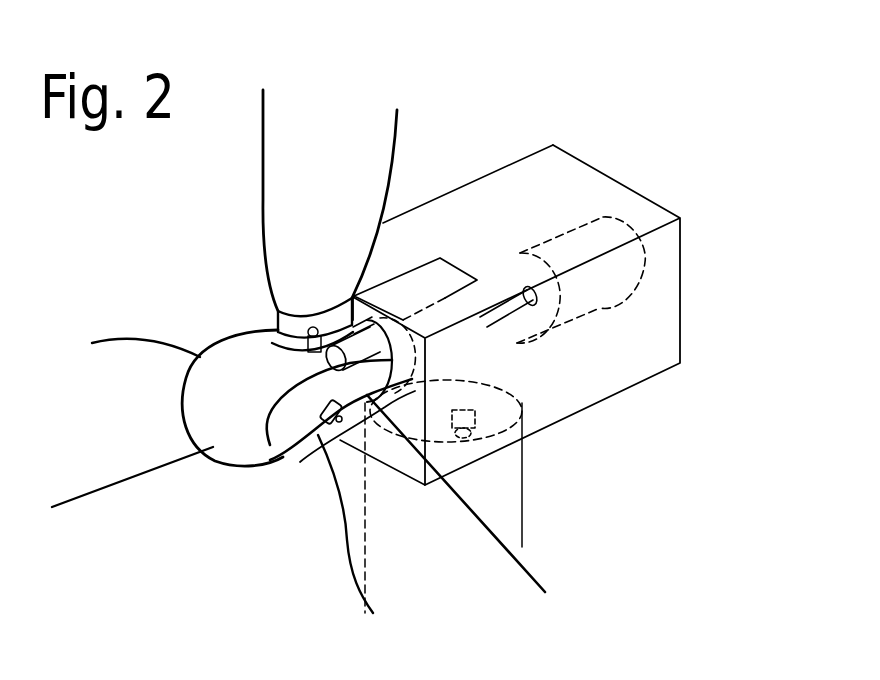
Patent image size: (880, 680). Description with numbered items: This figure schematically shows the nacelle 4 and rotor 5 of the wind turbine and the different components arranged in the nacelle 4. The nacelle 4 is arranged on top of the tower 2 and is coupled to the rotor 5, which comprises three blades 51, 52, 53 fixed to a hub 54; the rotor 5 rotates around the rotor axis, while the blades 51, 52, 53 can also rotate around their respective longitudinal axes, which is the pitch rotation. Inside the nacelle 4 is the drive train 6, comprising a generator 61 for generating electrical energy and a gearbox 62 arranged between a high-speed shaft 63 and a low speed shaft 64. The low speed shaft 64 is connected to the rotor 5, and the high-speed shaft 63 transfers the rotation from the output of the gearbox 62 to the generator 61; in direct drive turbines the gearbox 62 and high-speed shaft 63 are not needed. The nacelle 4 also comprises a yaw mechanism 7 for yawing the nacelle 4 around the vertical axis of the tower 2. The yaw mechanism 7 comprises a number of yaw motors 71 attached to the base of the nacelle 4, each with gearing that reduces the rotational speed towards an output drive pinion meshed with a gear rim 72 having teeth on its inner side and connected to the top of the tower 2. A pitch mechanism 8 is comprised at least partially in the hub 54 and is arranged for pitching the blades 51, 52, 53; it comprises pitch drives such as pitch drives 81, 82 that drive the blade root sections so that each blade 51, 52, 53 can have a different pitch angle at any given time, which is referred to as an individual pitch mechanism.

The tower 2 is at (508, 522).
The nacelle 4 is at (563, 175).
The rotor 5 is at (245, 238).
The blade 51 is at (360, 125).
The blade 52 is at (520, 575).
The blade 53 is at (112, 450).
The hub 54 is at (240, 417).
The drive train 6 is at (536, 276).
The generator 61 is at (612, 231).
The gearbox 62 is at (437, 277).
The high-speed shaft 63 is at (503, 300).
The low speed shaft 64 is at (270, 445).
The yaw mechanism 7 is at (483, 458).
The yaw motor 71 is at (465, 440).
The gear rim 72 is at (520, 410).
The pitch mechanism 8 is at (297, 450).
The pitch drive 81 is at (280, 350).
The pitch drive 82 is at (338, 420).